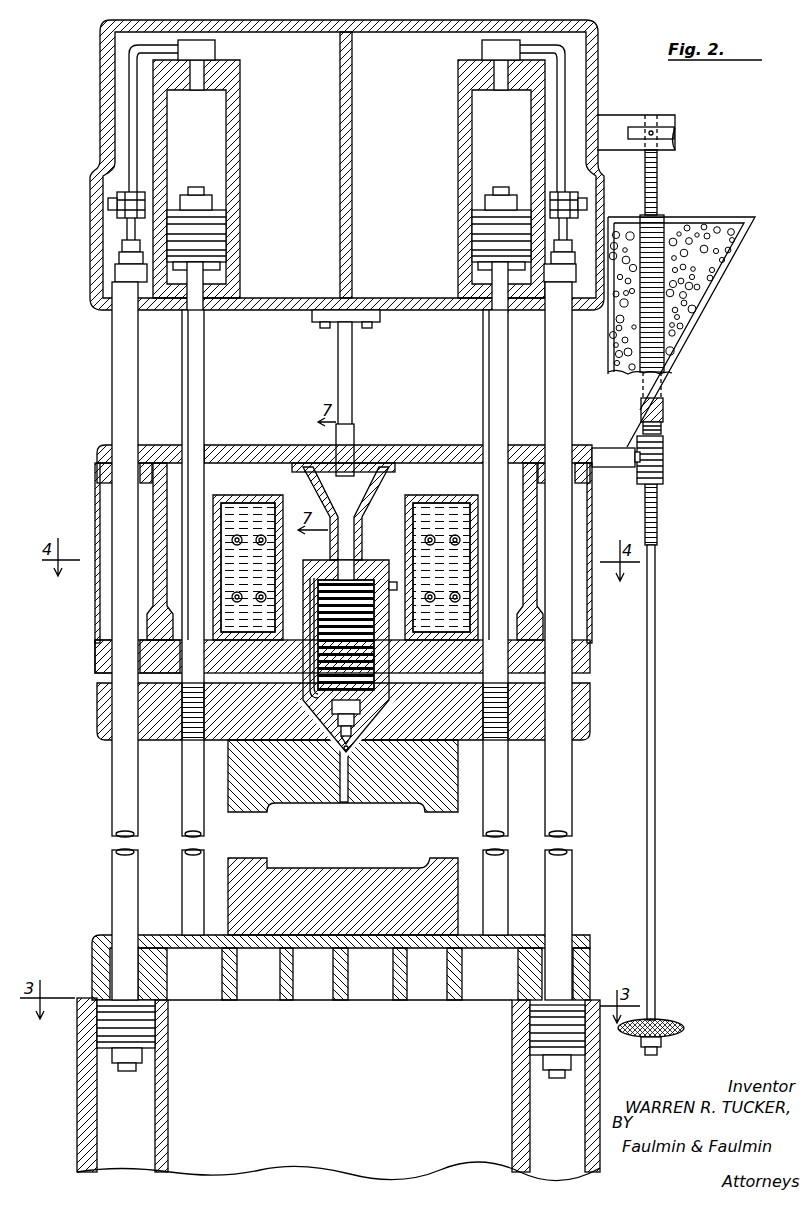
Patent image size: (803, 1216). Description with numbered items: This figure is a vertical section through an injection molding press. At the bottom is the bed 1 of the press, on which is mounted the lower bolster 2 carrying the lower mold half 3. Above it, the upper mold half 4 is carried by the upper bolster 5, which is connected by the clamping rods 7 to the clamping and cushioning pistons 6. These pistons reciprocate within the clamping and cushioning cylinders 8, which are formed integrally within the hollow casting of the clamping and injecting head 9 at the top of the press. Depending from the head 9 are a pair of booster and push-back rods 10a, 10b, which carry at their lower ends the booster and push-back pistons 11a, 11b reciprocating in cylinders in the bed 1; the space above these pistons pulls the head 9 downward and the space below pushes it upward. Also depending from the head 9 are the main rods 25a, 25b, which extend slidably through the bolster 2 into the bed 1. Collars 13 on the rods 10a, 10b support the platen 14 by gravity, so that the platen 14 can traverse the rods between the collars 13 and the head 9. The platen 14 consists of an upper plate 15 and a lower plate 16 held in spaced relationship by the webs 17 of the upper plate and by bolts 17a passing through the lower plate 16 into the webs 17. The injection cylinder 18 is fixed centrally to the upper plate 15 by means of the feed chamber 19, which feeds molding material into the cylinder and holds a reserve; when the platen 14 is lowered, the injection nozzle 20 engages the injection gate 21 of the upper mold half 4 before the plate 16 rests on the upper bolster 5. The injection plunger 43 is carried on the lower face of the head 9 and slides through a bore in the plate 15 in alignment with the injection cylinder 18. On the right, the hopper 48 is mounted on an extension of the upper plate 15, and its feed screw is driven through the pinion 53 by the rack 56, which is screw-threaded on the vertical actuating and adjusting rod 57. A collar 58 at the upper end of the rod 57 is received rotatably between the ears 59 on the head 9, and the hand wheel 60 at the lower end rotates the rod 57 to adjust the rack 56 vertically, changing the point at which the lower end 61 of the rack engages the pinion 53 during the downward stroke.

The bed 1 is at (77, 1100).
The lower bolster 2 is at (590, 946).
The lower mold half 3 is at (443, 857).
The upper mold half 4 is at (247, 814).
The upper bolster 5 is at (590, 736).
The clamping and cushioning pistons 6 is at (226, 220).
The clamping rods 7 is at (190, 345).
The clamping and cushioning cylinders 8 is at (238, 108).
The clamping and injecting head 9 is at (597, 85).
The booster and push-back rod 10a is at (566, 815).
The booster and push-back rod 10b is at (112, 779).
The booster and push-back piston 11a is at (530, 1046).
The booster and push-back piston 11b is at (98, 1038).
The collars 13 is at (97, 472).
The platen 14 is at (440, 438).
The upper plate 15 is at (232, 444).
The lower plate 16 is at (587, 669).
The webs 17 is at (158, 528).
The bolts 17a is at (150, 655).
The injection cylinder 18 is at (394, 572).
The feed chamber 19 is at (352, 470).
The injection nozzle 20 is at (343, 735).
The injection gate 21 is at (346, 776).
The main rod 25a is at (483, 352).
The main rod 25b is at (205, 376).
The injection plunger 43 is at (348, 366).
The hopper 48 is at (720, 283).
The pinion 53 is at (664, 468).
The rack 56 is at (663, 411).
The actuating and adjusting rod 57 is at (656, 621).
The collar 58 is at (636, 127).
The ears 59 is at (676, 150).
The hand wheel 60 is at (660, 1022).
The lower end of rack 61 is at (661, 428).